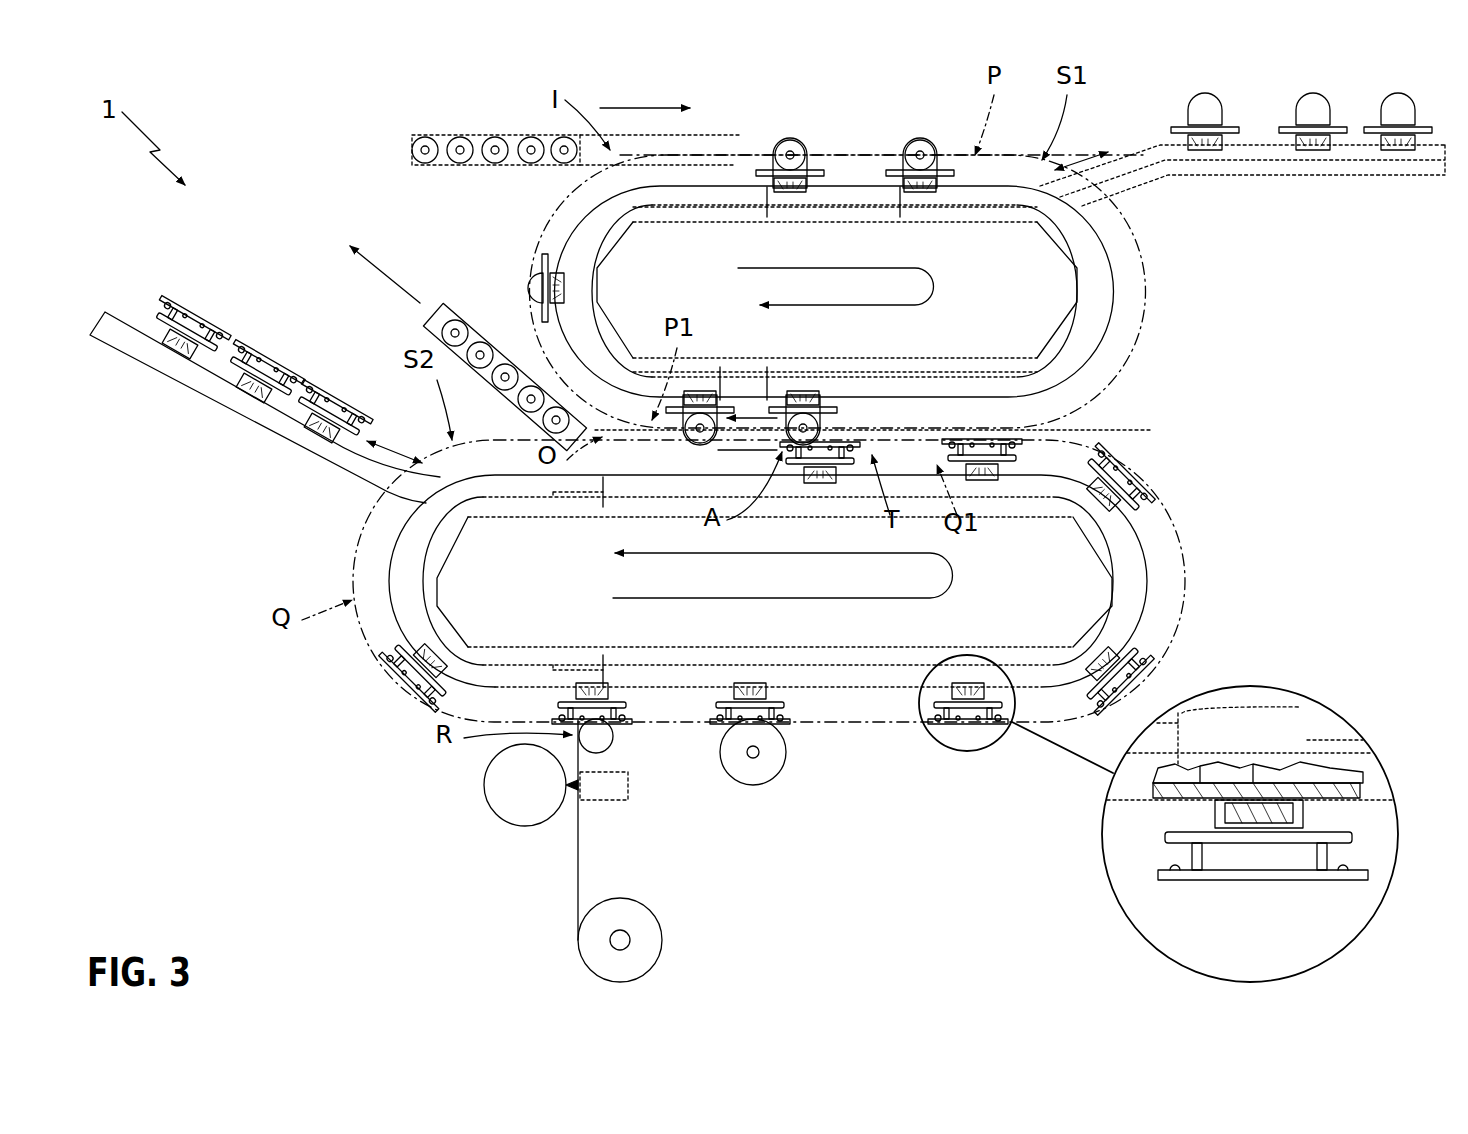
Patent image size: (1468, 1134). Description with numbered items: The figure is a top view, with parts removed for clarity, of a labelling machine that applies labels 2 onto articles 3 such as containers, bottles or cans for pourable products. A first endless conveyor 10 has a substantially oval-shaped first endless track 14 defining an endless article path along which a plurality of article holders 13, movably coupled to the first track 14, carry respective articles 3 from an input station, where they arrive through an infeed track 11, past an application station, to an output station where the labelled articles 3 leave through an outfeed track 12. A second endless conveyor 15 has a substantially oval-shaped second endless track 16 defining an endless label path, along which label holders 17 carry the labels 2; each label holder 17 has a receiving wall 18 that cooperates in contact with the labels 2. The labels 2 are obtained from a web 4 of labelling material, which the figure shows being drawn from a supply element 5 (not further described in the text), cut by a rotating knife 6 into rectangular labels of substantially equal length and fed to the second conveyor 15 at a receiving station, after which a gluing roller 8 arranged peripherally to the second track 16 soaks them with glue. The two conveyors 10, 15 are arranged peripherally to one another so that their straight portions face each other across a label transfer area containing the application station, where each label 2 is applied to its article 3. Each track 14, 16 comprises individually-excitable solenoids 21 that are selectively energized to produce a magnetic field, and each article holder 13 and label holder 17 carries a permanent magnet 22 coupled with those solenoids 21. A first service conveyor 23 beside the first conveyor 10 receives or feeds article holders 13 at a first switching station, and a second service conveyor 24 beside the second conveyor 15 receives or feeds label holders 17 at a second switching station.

The label 2 is at (979, 443).
The article 3 is at (420, 137).
The web 4 is at (578, 880).
The reel 5 is at (647, 935).
The rotating knife 6 is at (502, 790).
The gluing roller 8 is at (772, 765).
The first endless conveyor 10 is at (1172, 313).
The infeed track 11 is at (412, 150).
The outfeed track 12 is at (447, 330).
The article holder 13 is at (797, 195).
The first endless track 14 is at (1090, 345).
The second endless conveyor 15 is at (1197, 590).
The second endless track 16 is at (1130, 565).
The label holder 17 is at (822, 470).
The receiving wall 18 is at (1162, 878).
The individually-excitable solenoids 21 is at (1202, 770).
The permanent magnet 22 is at (1212, 815).
The first service conveyor 23 is at (1270, 190).
The second service conveyor 24 is at (245, 450).